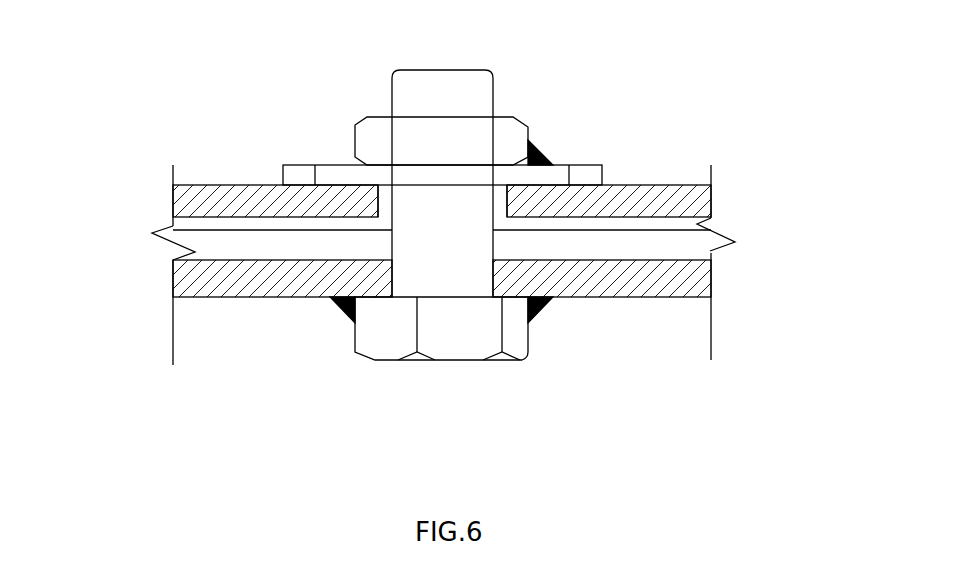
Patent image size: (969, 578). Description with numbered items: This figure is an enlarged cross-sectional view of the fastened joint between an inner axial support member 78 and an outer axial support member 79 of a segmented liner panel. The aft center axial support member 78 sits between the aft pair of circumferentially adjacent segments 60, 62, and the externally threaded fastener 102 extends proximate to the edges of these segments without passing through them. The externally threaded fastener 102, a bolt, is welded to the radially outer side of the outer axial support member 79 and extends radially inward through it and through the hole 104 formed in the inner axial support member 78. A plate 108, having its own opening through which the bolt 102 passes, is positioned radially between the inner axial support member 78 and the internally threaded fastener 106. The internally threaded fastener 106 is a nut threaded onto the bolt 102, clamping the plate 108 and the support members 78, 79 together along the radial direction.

The externally threaded fastener 102 is at (467, 102).
The hole 104 is at (388, 203).
The internally threaded fastener 106 is at (513, 140).
The plate 108 is at (582, 178).
The aft center axial support member 78 is at (203, 201).
The outer axial support member 79 is at (215, 287).
The aft segment 60 is at (193, 245).
The aft segment 62 is at (683, 245).